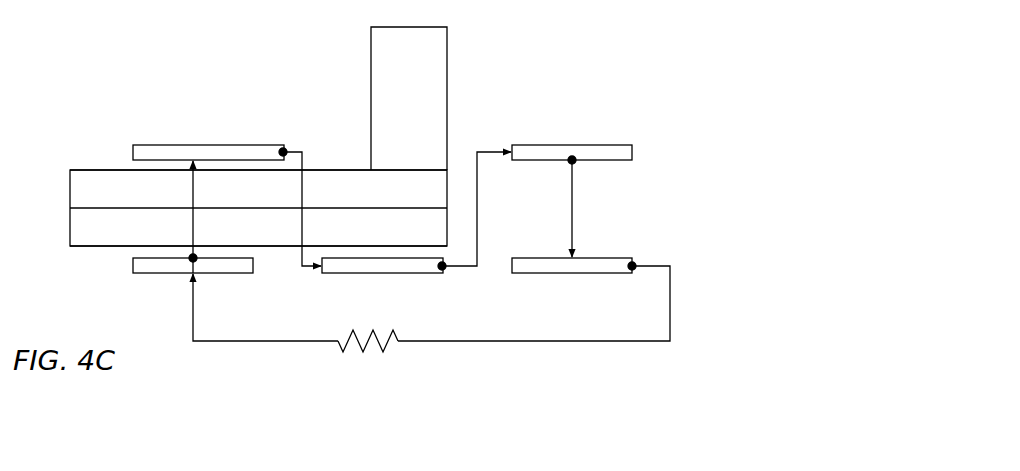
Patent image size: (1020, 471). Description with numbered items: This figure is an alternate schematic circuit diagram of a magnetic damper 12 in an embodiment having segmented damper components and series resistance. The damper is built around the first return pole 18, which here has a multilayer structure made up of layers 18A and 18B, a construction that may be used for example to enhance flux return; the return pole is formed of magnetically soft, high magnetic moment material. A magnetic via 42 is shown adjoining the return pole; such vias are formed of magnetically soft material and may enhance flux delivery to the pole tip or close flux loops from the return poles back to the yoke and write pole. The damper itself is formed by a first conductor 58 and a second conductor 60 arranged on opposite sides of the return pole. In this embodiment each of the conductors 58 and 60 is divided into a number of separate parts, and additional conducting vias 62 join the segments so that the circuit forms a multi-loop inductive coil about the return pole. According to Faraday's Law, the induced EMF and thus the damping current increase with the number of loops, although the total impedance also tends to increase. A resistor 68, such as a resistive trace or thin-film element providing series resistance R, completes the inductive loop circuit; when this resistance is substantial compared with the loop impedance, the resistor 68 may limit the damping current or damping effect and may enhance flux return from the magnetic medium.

The magnetic damper 12 is at (638, 124).
The first return pole 18 is at (66, 164).
The layer of first return pole 18A is at (128, 207).
The layer of first return pole 18B is at (173, 243).
The magnetic via 42 is at (423, 113).
The first conductor 58 is at (172, 274).
The second conductor 60 is at (183, 143).
The conducting via 62 is at (303, 165).
The resistor 68 is at (344, 332).